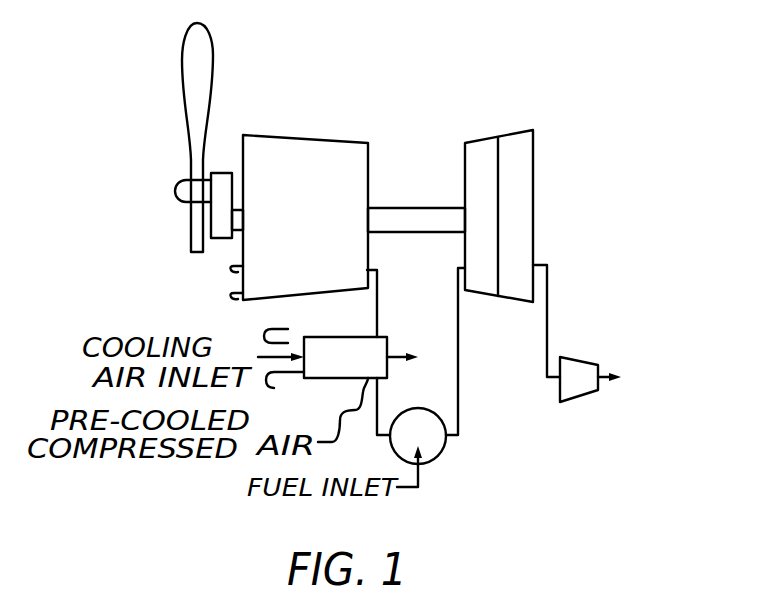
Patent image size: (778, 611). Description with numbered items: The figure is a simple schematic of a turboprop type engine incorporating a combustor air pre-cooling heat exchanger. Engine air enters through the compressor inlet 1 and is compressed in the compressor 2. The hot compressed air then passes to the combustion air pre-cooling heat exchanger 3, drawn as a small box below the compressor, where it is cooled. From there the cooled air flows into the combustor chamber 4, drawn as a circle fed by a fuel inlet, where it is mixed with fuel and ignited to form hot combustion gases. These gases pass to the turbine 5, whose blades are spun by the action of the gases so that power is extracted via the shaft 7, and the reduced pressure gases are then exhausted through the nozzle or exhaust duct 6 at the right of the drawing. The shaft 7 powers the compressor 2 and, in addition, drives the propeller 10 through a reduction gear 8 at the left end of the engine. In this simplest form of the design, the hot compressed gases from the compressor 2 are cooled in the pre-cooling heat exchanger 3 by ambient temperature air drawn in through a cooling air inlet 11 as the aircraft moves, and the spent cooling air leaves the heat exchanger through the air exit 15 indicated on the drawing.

The compressor inlet 1 is at (228, 279).
The compressor 2 is at (312, 150).
The combustion air pre-cooling heat exchanger 3 is at (357, 343).
The combustor chamber 4 is at (440, 459).
The turbine 5 is at (522, 163).
The nozzle or exhaust duct 6 is at (580, 367).
The shaft 7 is at (403, 217).
The reduction gear 8 is at (222, 173).
The propeller 10 is at (207, 57).
The cooling air inlet 11 is at (284, 331).
The cooling air exit 15 is at (425, 358).